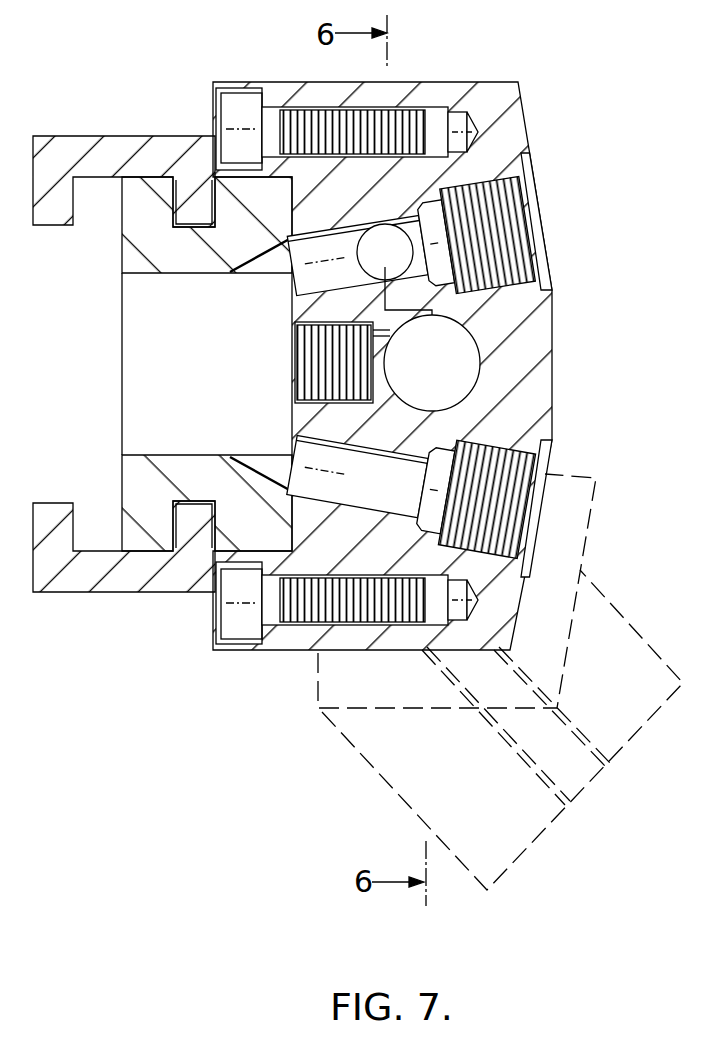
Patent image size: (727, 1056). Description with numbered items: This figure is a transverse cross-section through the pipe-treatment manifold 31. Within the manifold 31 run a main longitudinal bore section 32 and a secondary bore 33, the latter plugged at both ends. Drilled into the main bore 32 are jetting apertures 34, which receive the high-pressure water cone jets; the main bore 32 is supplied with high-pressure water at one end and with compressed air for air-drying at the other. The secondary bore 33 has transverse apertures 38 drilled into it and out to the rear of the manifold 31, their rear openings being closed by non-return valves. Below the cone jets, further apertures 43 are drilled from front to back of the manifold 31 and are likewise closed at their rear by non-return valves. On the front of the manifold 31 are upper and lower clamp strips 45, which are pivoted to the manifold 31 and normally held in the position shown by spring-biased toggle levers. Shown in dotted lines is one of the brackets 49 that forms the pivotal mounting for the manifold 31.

The pipe-treatment manifold 31 is at (551, 190).
The main longitudinal bore section 32 is at (462, 366).
The secondary bore 33 is at (383, 240).
The jetting apertures 34 is at (315, 370).
The transverse apertures 38 is at (505, 242).
The further apertures 43 is at (490, 498).
The clamp strips 45 is at (113, 150).
The bracket 49 is at (420, 773).